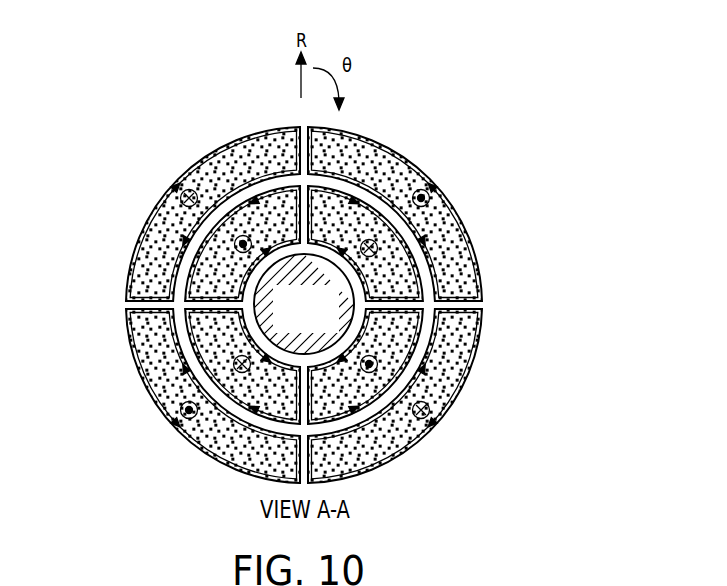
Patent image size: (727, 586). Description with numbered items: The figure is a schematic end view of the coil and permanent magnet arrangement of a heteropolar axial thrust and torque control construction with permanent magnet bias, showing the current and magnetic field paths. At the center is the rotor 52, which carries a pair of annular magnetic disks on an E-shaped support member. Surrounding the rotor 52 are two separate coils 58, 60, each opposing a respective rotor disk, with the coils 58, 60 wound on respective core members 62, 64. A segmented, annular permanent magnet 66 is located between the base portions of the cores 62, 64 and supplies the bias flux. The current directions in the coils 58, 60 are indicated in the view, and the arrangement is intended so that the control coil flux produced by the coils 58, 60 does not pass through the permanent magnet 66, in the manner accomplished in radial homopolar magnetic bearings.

The rotor 52 is at (313, 338).
The coil 58 is at (203, 143).
The coil 60 is at (225, 268).
The core member 62 is at (460, 263).
The core member 64 is at (397, 337).
The segmented annular permanent magnet 66 is at (353, 180).